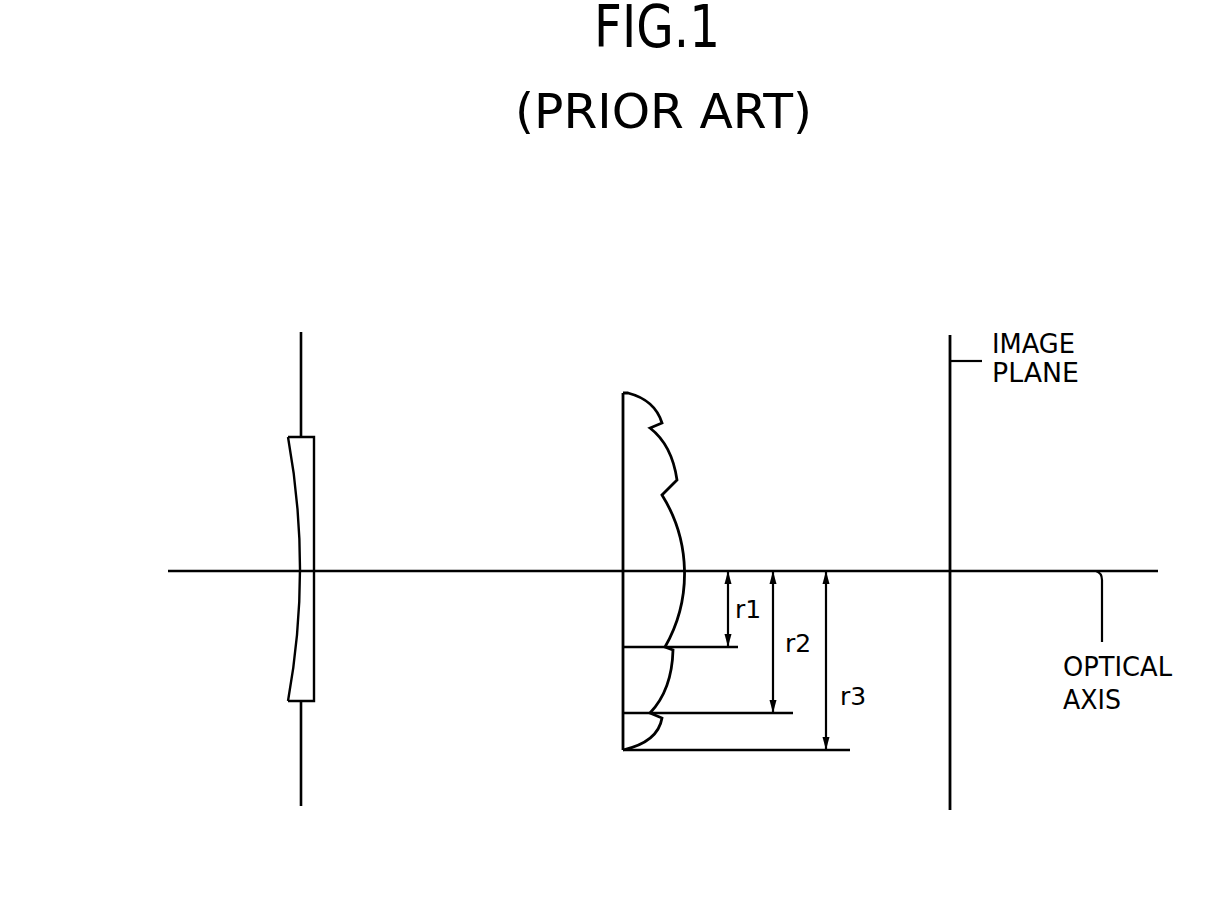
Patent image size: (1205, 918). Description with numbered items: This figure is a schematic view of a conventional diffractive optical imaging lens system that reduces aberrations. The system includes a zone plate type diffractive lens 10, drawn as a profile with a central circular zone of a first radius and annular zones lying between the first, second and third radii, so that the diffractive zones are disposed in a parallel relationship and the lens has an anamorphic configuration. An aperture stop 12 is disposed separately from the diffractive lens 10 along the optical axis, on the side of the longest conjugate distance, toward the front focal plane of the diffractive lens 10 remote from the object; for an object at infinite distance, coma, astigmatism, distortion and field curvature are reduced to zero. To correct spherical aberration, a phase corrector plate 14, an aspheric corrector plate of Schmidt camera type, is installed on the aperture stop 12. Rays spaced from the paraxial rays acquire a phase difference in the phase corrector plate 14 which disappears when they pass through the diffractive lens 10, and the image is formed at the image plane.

The diffractive lens 10 is at (645, 408).
The aperture stop 12 is at (278, 569).
The phase corrector plate 14 is at (298, 688).